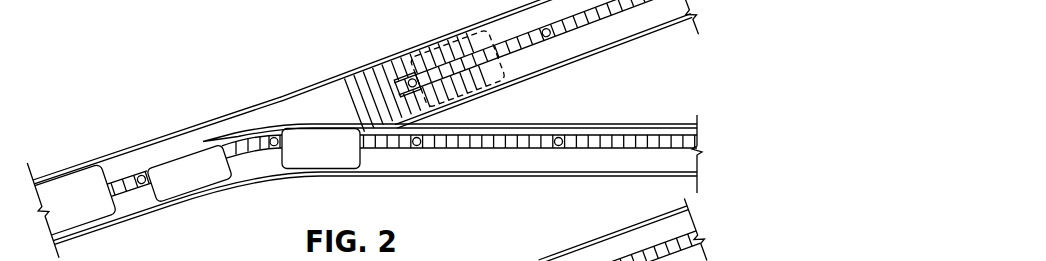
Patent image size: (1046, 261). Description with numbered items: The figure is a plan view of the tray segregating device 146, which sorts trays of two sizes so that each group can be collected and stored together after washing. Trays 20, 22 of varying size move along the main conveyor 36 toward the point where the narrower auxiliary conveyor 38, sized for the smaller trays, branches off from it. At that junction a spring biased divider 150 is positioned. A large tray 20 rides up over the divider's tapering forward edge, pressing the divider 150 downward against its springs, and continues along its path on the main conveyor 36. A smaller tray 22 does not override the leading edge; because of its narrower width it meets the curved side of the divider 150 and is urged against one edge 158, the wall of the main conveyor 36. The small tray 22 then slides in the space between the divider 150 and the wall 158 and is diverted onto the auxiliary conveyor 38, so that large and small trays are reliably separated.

The tray 20 is at (75, 181).
The tray 22 is at (185, 188).
The main conveyor 36 is at (258, 97).
The auxiliary conveyor 38 is at (457, 177).
The tray segregating device 146 is at (250, 183).
The spring biased divider 150 is at (230, 132).
The edge (wall) of the conveyor 158 is at (272, 181).